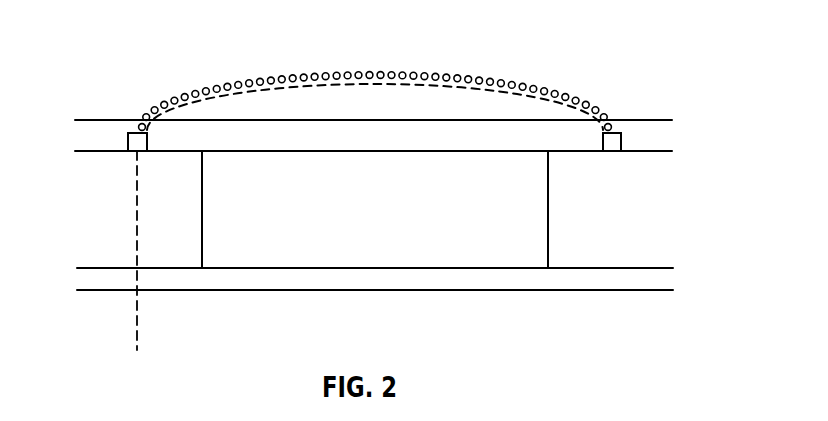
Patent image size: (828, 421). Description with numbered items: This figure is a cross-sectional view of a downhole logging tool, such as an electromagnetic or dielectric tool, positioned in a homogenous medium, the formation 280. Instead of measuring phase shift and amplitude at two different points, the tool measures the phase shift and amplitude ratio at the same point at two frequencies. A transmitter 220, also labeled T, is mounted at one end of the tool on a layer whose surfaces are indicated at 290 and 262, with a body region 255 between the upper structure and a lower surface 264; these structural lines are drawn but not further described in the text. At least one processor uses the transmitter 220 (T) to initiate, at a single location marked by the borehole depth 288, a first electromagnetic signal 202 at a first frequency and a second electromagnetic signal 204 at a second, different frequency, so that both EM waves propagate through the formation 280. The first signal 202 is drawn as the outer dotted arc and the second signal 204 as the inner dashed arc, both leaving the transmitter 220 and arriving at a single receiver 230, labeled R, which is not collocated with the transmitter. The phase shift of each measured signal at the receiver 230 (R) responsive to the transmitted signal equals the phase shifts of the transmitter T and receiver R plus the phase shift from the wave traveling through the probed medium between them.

The formation 280 is at (394, 50).
The first electromagnetic signal 202 is at (477, 74).
The second electromagnetic signal 204 is at (391, 88).
The substrate top layer 290 is at (163, 291).
The cavity / middle body 255 is at (372, 269).
The bottom layer upper surface 262 is at (123, 269).
The bottom layer lower surface 264 is at (610, 269).
The borehole depth 288 is at (139, 326).
The transmitter 220 is at (128, 146).
The receiver 230 is at (621, 144).
The transmitter T is at (128, 142).
The receiver R is at (621, 140).